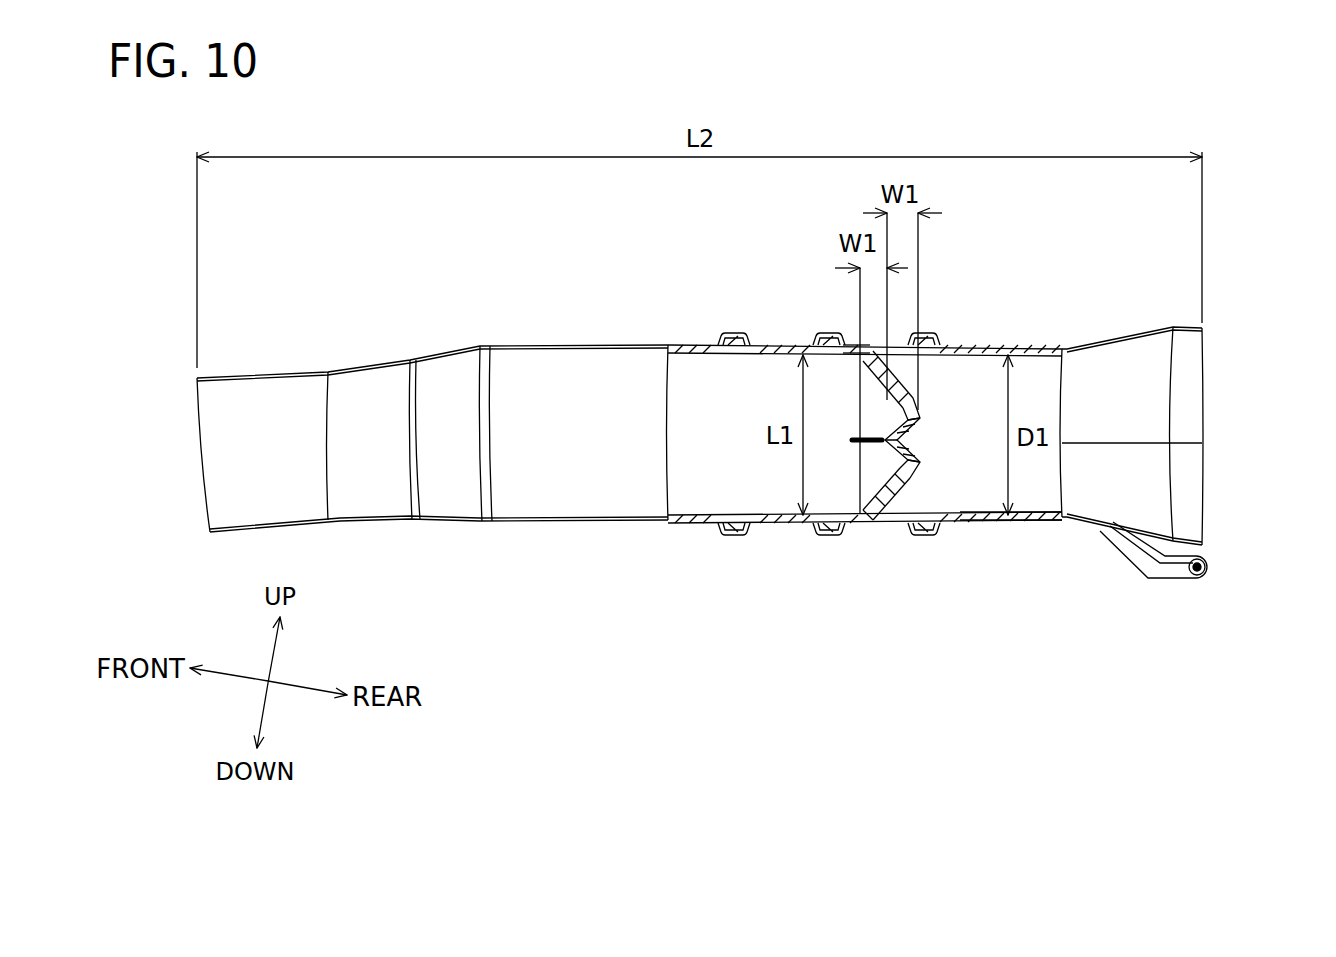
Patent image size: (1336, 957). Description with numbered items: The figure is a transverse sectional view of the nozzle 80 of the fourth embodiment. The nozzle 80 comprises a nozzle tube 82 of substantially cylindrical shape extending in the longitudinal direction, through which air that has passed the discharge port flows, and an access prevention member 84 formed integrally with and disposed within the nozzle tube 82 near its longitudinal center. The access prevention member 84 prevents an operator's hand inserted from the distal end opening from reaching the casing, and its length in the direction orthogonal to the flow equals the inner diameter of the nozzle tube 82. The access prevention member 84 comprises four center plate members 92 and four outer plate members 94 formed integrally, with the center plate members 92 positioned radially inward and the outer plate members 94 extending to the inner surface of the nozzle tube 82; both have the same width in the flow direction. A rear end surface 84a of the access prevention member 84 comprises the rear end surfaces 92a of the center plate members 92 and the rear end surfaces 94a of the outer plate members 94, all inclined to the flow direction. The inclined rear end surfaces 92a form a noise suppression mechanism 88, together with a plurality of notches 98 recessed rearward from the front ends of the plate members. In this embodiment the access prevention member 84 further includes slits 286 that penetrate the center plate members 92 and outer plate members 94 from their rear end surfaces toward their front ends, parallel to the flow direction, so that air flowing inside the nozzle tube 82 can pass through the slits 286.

The nozzle 80 is at (1225, 365).
The nozzle tube 82 is at (1033, 520).
The access prevention member 84 is at (915, 487).
The rear end surface 84a is at (914, 419).
The noise suppression mechanism 88 is at (923, 347).
The center plate member 92 is at (920, 430).
The rear end surface of center plate member 92a is at (917, 461).
The outer plate member 94 is at (873, 385).
The rear end surface of outer plate member 94a is at (897, 502).
The notch 98 is at (855, 352).
The slit 286 is at (885, 490).